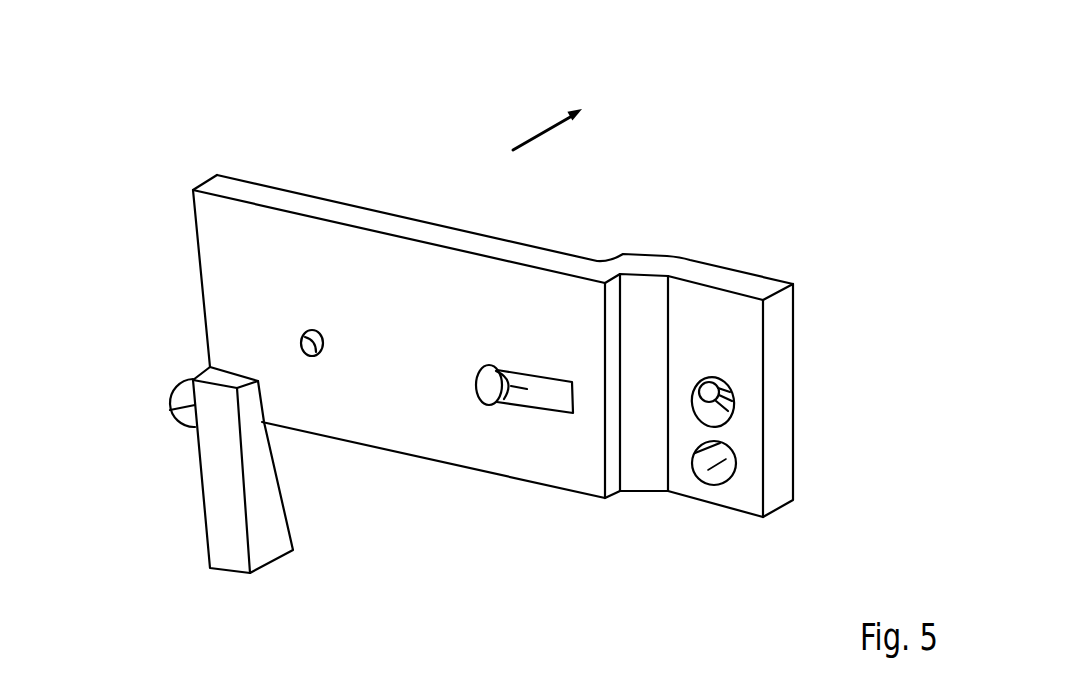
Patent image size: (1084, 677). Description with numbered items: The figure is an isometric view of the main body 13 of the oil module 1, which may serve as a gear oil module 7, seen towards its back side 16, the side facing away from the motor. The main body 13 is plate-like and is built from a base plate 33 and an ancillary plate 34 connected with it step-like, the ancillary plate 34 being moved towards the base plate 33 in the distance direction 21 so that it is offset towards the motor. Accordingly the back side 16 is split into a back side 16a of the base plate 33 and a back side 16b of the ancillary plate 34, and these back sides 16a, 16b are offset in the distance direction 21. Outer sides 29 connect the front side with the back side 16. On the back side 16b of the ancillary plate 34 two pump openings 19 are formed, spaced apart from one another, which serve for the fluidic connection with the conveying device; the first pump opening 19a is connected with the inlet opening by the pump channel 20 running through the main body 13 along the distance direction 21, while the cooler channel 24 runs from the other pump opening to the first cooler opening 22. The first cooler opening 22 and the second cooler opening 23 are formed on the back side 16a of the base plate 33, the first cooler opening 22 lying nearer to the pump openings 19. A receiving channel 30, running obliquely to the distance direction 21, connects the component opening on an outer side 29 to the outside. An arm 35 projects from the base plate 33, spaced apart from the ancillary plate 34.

The oil module 1 is at (497, 302).
The gear oil module 7 is at (497, 302).
The main body 13 is at (619, 212).
The back side 16 is at (481, 336).
The back side of the base plate 16a is at (237, 241).
The back side of the ancillary plate 16b is at (738, 320).
The pump opening 19 is at (681, 507).
The first pump opening 19a is at (716, 473).
The pump channel 20 is at (745, 480).
The distance direction 21 is at (538, 131).
The first cooler opening 22 is at (492, 399).
The second cooler opening 23 is at (302, 350).
The cooler channel 24 is at (735, 404).
The outer side 29 is at (780, 375).
The receiving channel 30 is at (180, 393).
The base plate 33 is at (280, 180).
The ancillary plate 34 is at (708, 250).
The arm 35 is at (275, 499).